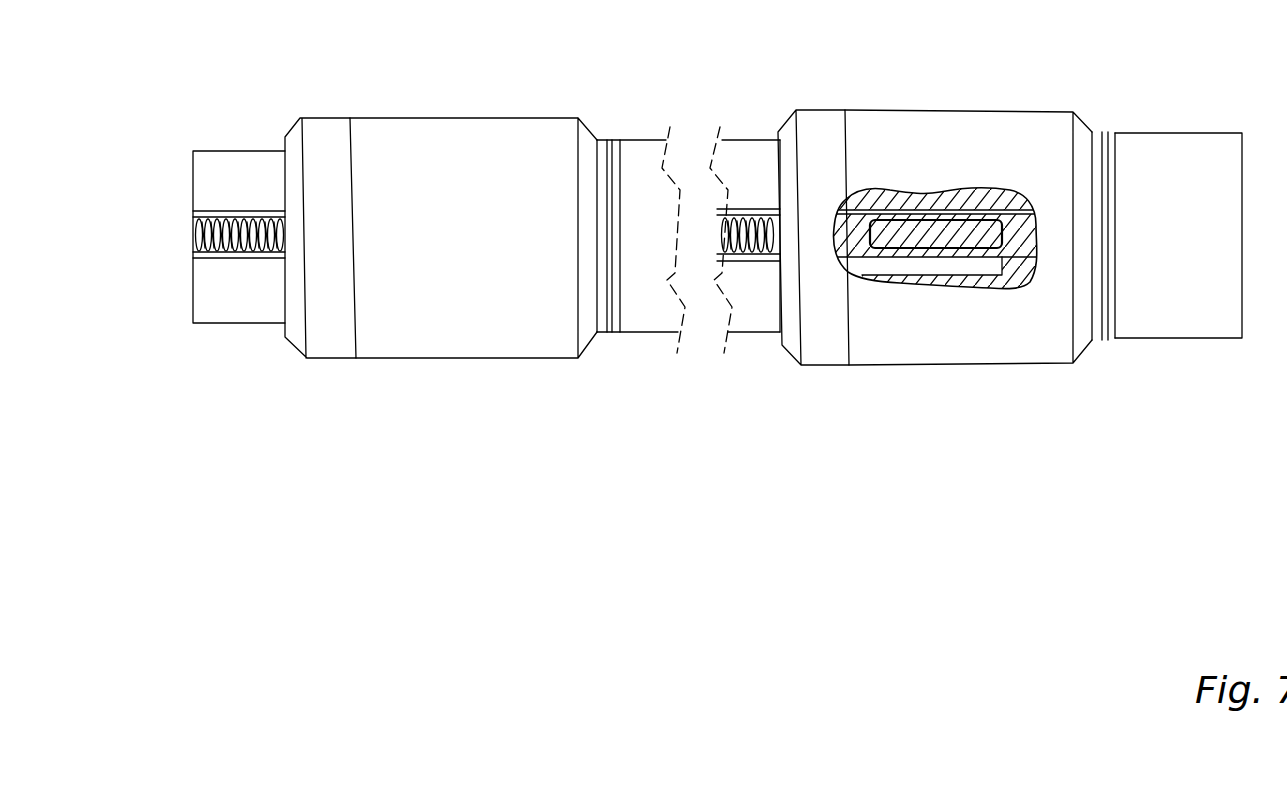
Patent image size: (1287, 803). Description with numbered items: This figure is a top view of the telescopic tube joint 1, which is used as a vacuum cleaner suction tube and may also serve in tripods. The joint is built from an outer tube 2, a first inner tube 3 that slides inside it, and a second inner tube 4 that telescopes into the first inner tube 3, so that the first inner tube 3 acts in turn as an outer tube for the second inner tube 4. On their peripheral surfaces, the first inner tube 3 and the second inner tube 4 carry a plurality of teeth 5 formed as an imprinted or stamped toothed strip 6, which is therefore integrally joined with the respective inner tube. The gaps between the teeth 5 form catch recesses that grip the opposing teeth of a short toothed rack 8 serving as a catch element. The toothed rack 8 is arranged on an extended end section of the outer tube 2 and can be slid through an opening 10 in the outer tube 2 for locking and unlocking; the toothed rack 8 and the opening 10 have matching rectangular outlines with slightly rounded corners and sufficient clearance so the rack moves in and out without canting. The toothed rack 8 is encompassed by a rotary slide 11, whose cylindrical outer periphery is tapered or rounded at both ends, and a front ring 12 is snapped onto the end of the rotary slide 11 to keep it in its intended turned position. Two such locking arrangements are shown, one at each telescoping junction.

The telescopic tube joint 1 is at (655, 368).
The outer tube 2 is at (1168, 328).
The first inner tube 3 is at (735, 135).
The second inner tube 4 is at (225, 315).
The teeth 5 is at (222, 223).
The toothed strip 6 is at (193, 247).
The toothed rack 8 is at (943, 236).
The opening 10 is at (913, 228).
The rotary slide 11 is at (467, 345).
The front ring 12 is at (327, 343).